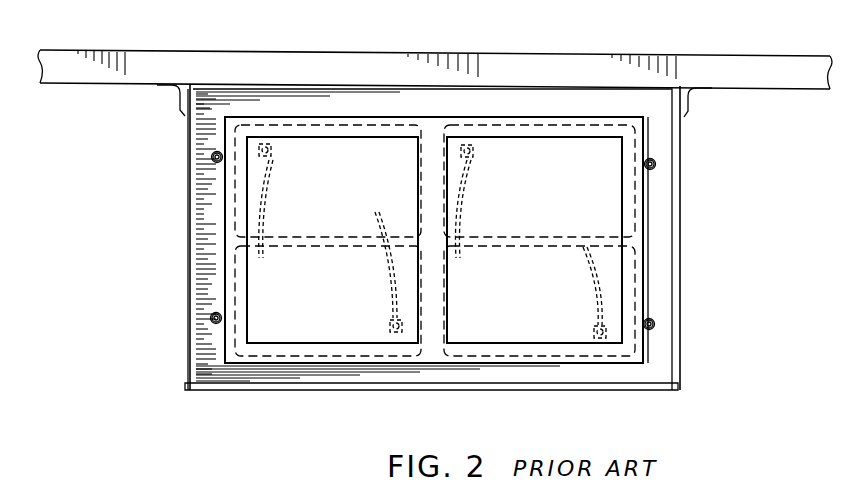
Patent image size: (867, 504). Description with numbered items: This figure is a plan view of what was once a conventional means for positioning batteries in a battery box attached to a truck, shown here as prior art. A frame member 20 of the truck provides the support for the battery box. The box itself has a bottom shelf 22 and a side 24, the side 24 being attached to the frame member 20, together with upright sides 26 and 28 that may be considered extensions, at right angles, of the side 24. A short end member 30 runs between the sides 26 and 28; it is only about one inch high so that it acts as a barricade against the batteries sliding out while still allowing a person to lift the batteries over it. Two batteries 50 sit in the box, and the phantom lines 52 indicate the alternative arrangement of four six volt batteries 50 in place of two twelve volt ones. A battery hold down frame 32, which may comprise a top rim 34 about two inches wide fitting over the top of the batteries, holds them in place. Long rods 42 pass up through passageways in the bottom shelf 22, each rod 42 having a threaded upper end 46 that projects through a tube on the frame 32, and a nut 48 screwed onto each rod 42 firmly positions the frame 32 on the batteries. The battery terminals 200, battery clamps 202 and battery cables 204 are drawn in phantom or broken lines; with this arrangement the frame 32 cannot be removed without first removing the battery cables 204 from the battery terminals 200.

The frame member 20 is at (168, 57).
The bottom shelf 22 is at (664, 213).
The side 24 is at (455, 93).
The upright side 26 is at (188, 196).
The upright side 28 is at (678, 268).
The end member 30 is at (490, 392).
The battery hold down frame 32 is at (578, 367).
The top rim 34 is at (650, 147).
The long rod 42 is at (211, 156).
The threaded upper end of rod 46 is at (212, 318).
The nut 48 is at (211, 159).
The batteries 50 is at (368, 183).
The phantom lines 52 is at (541, 230).
The battery terminals 200 is at (594, 334).
The battery clamps 202 is at (590, 310).
The battery cables 204 is at (607, 239).